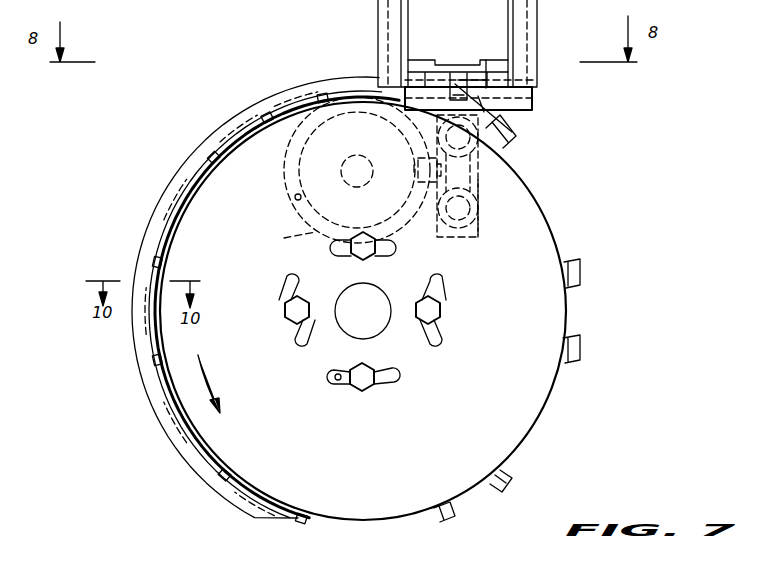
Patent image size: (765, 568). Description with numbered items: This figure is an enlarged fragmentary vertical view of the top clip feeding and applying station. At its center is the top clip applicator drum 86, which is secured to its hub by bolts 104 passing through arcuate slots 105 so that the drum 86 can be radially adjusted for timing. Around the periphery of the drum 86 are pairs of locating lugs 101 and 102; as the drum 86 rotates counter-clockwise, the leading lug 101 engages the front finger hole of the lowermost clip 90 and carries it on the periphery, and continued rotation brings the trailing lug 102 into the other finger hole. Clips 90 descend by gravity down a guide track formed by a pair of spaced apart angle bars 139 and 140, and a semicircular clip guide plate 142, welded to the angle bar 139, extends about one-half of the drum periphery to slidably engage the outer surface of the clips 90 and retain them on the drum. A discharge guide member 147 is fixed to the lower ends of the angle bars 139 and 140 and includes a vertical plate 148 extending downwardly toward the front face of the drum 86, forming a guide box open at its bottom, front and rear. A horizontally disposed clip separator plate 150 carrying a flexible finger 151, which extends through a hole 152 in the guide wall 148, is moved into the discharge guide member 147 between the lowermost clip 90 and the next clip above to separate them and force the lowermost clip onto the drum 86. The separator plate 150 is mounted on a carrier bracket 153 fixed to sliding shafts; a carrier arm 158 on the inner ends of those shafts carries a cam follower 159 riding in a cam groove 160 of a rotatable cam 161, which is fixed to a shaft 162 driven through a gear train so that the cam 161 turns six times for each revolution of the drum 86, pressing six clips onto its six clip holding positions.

The top clip applicator drum 86 is at (524, 398).
The clips 90 is at (216, 160).
The leading locating lug 101 is at (582, 278).
The trailing locating lug 102 is at (582, 346).
The bolts 104 is at (368, 384).
The arcuate slots 105 is at (336, 380).
The angle bar 139 is at (380, 30).
The angle bar 140 is at (535, 30).
The clip guide plate 142 is at (300, 92).
The discharge guide member 147 is at (540, 104).
The vertical plate 148 is at (504, 124).
The clip separator plate 150 is at (537, 80).
The flexible finger 151 is at (457, 88).
The hole 152 is at (474, 88).
The carrier bracket 153 is at (480, 214).
The carrier arm 158 is at (452, 236).
The cam follower 159 is at (416, 174).
The cam groove 160 is at (302, 198).
The cam 161 is at (284, 238).
The shaft 162 is at (356, 156).